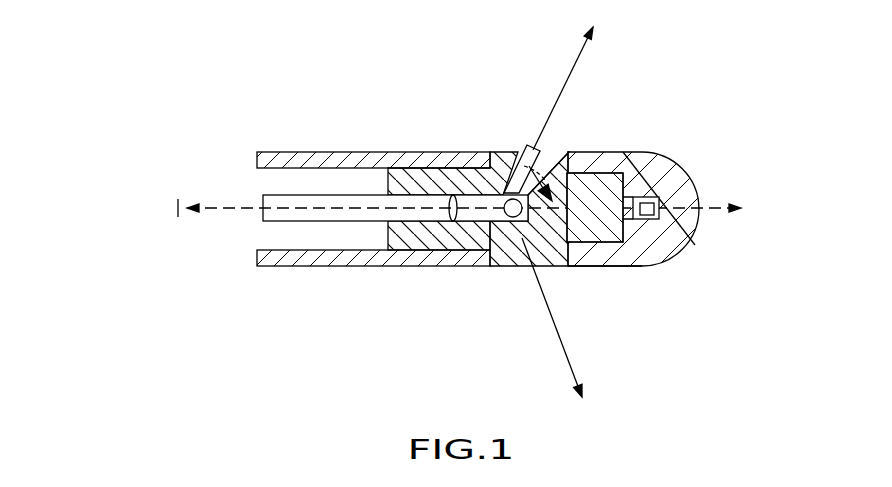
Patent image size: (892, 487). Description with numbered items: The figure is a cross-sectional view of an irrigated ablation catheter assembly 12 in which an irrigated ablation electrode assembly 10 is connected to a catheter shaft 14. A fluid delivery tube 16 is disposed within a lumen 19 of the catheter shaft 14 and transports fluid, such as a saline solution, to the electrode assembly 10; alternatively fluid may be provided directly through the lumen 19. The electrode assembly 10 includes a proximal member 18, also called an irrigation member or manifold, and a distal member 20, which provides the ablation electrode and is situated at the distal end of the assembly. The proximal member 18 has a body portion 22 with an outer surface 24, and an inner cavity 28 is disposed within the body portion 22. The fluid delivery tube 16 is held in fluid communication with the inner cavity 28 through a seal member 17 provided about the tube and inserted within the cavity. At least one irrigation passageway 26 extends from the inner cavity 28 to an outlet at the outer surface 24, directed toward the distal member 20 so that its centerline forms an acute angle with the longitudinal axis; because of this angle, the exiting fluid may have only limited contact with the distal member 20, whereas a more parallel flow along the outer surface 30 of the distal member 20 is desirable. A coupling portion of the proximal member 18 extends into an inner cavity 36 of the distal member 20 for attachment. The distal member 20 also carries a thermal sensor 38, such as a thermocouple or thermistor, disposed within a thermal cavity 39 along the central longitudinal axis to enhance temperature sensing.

The irrigated ablation electrode assembly 10 is at (459, 198).
The irrigated ablation catheter assembly 12 is at (369, 167).
The catheter shaft 14 is at (275, 152).
The fluid delivery tube 16 is at (308, 214).
The seal member 17 is at (387, 225).
The proximal member 18 is at (536, 126).
The lumen 19 is at (270, 262).
The distal member 20 is at (682, 125).
The body portion 22 is at (581, 242).
The outer surface 24 is at (563, 150).
The irrigation passageway 26 is at (529, 262).
The inner cavity 28 is at (477, 237).
The outer surface 30 is at (592, 262).
The inner cavity 36 is at (612, 243).
The thermal sensor 38 is at (662, 196).
The thermal cavity 39 is at (664, 226).